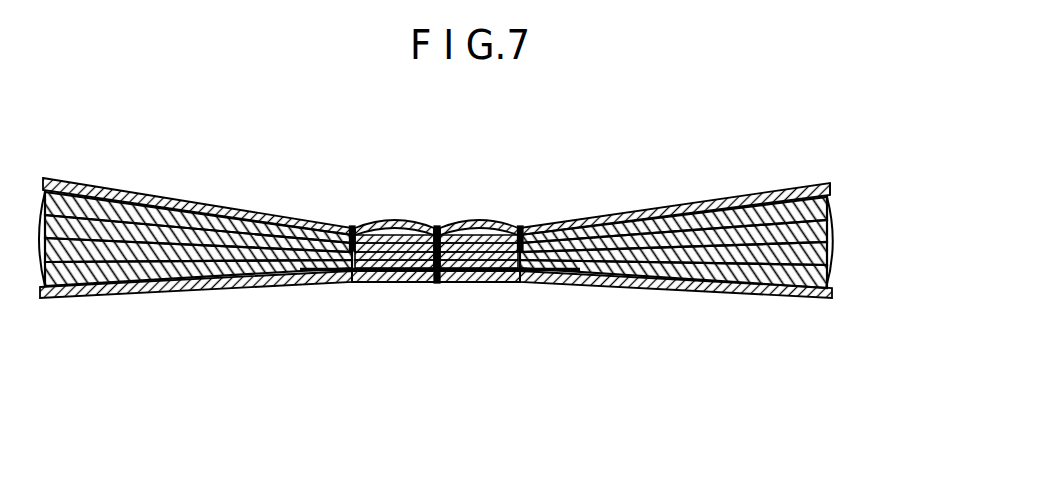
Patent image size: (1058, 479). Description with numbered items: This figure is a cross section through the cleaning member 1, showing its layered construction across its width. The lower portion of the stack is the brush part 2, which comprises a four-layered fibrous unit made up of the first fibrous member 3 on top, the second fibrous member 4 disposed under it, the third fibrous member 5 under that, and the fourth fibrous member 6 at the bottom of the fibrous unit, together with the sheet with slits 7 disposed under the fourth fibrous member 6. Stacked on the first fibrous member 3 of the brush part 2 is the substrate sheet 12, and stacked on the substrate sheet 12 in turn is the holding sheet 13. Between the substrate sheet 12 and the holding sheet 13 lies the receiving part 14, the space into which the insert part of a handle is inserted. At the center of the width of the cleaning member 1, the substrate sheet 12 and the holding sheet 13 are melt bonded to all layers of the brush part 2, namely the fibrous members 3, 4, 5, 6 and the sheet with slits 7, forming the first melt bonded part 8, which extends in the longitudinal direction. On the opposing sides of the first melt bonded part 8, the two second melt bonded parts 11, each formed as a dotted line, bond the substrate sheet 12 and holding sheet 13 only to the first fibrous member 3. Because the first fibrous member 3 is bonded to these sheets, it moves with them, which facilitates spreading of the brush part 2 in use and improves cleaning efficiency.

The cleaning member 1 is at (657, 146).
The brush part 2 is at (878, 188).
The first fibrous member 3 is at (829, 210).
The second fibrous member 4 is at (835, 226).
The third fibrous member 5 is at (834, 250).
The fourth fibrous member 6 is at (831, 273).
The sheet with slits 7 is at (832, 293).
The first melt bonded part 8 is at (438, 227).
The second melt bonded parts 11 is at (352, 227).
The substrate sheet 12 is at (831, 188).
The holding sheet 13 is at (801, 181).
The receiving part 14 is at (392, 231).